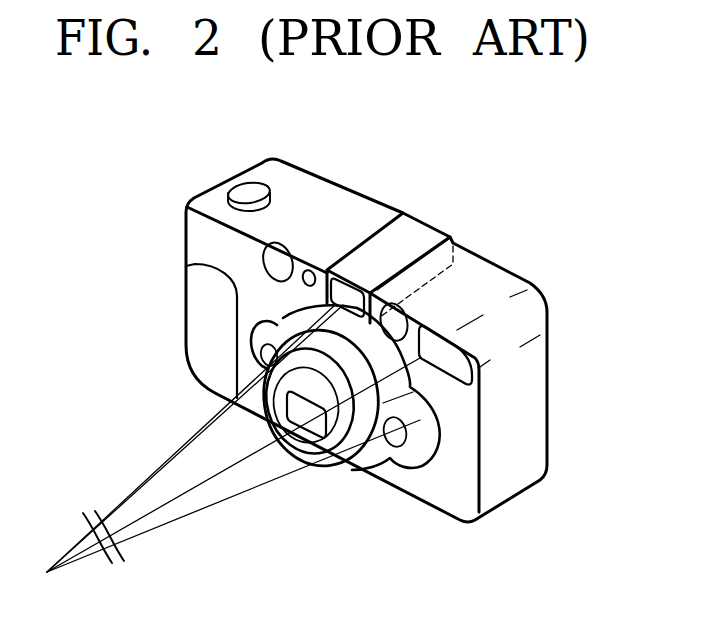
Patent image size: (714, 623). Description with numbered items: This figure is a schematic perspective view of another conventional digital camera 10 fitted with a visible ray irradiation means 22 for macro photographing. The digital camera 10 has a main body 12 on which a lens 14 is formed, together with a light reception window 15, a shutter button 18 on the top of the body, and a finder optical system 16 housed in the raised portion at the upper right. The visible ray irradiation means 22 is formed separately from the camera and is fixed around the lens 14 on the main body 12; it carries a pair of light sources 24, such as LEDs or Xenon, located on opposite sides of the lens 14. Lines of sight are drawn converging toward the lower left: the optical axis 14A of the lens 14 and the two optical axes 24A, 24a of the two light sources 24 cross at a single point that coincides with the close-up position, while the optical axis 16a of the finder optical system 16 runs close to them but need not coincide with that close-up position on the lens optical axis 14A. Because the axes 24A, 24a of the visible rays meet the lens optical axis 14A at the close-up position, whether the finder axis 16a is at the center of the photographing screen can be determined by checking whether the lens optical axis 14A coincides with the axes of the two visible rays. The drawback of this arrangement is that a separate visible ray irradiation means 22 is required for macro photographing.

The digital camera 10 is at (527, 211).
The main body 12 is at (347, 203).
The lens 14 is at (313, 445).
The optical axis of the lens 14A is at (197, 485).
The light reception window 15 is at (275, 263).
The finder optical system 16 is at (418, 228).
The optical axis of the finder optical system 16a is at (147, 478).
The shutter button 18 is at (247, 190).
The visible ray irradiation means 22 is at (365, 460).
The light sources 24 is at (262, 355).
The optical axis of the light source 24a is at (203, 425).
The optical axes of the light sources 24A is at (263, 492).